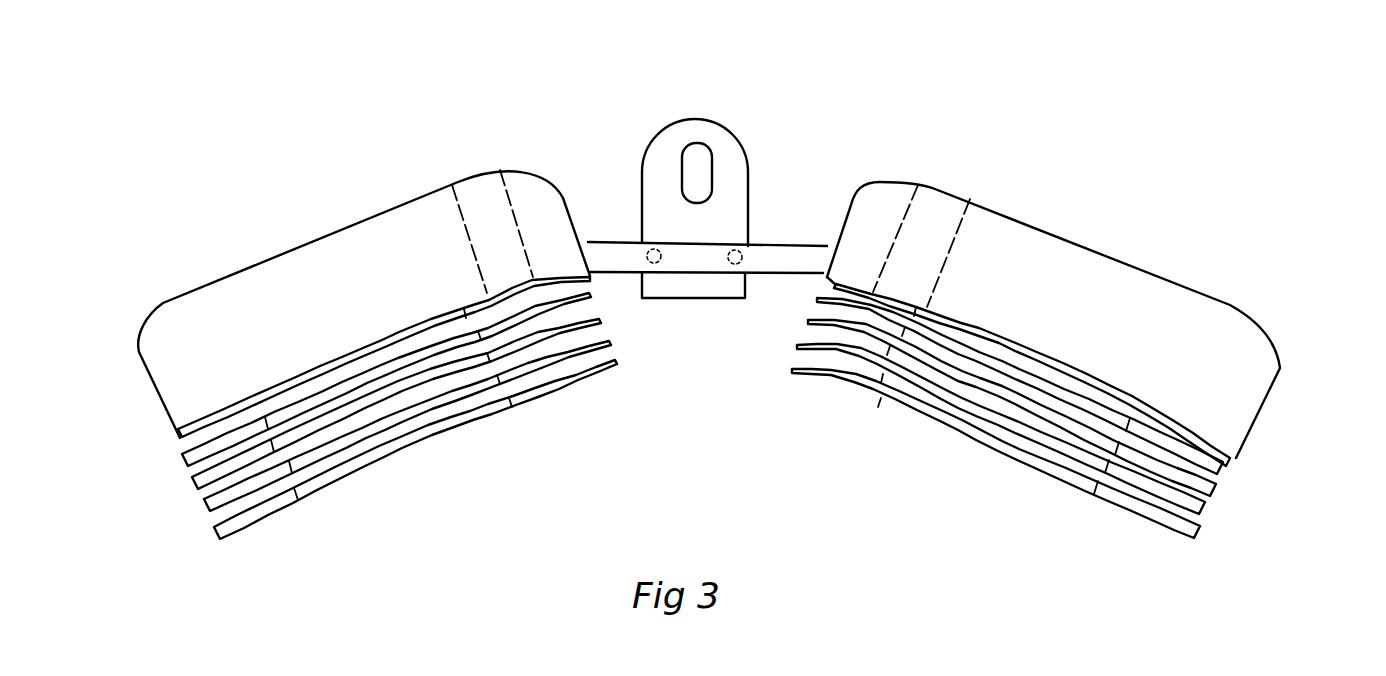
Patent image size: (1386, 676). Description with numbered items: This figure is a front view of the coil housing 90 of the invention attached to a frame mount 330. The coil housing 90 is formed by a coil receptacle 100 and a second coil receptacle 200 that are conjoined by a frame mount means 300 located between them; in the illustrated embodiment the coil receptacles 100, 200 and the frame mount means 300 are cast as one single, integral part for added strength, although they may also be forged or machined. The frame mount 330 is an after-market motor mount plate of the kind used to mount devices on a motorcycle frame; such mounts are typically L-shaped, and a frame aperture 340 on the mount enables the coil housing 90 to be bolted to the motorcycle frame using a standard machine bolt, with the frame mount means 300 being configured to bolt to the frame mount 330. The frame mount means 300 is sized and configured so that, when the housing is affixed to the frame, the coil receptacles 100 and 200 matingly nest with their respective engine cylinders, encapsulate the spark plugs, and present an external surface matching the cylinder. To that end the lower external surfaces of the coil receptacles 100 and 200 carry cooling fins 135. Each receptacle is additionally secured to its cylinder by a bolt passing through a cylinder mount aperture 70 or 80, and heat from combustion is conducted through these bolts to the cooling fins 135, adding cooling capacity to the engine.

The coil receptacle 100 is at (275, 295).
The coil receptacle 200 is at (1057, 283).
The cylinder mount aperture 70 is at (480, 220).
The cylinder mount aperture 80 is at (927, 235).
The coil housing 90 is at (672, 164).
The frame mount means 300 is at (767, 263).
The frame mount 330 is at (727, 165).
The frame aperture 340 is at (695, 167).
The cooling fins 135 is at (186, 480).